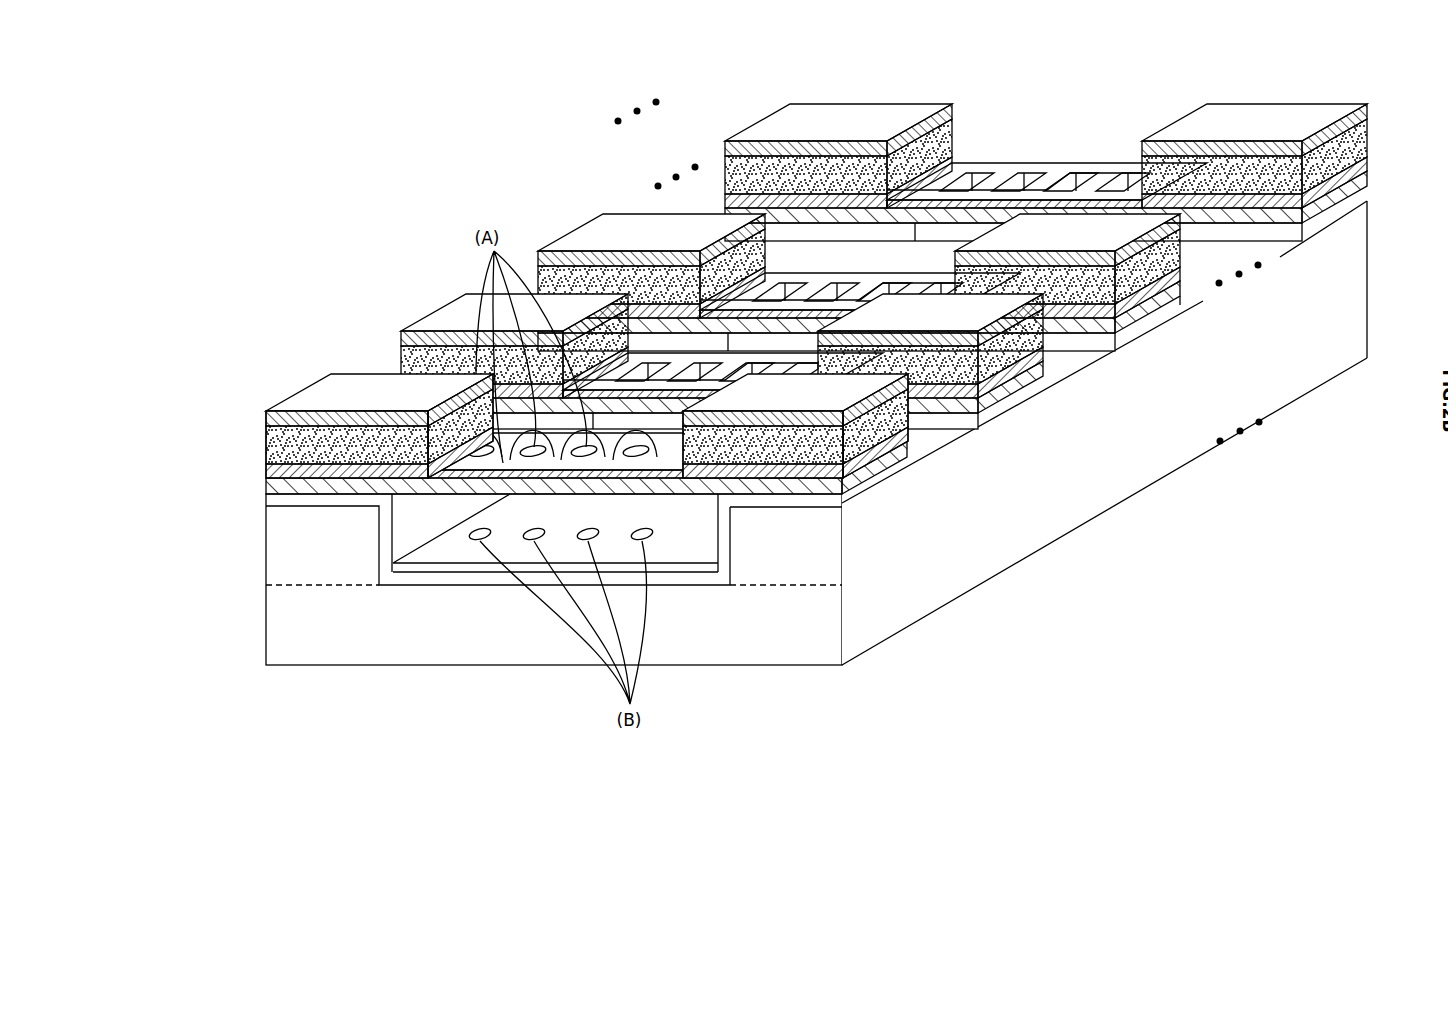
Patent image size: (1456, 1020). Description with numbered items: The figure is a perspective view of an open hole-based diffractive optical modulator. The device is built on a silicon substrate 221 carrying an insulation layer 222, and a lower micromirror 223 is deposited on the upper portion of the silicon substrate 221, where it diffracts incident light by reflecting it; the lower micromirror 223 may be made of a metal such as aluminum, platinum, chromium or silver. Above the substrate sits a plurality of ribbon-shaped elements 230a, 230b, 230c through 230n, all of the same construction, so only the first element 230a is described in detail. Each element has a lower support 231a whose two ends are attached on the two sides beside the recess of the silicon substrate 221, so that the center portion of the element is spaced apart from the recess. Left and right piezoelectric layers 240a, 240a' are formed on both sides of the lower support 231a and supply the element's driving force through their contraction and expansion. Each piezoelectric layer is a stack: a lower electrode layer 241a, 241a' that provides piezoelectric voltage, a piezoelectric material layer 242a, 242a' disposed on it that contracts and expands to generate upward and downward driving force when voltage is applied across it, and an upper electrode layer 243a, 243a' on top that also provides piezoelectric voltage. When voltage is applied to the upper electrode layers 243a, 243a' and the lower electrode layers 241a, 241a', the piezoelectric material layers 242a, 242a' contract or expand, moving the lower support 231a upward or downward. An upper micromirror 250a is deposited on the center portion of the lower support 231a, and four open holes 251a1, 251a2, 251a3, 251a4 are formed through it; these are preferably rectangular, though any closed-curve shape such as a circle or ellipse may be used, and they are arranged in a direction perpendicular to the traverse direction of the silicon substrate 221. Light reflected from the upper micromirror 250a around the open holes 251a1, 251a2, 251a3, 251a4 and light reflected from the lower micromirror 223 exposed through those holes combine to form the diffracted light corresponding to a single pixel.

The silicon substrate 221 is at (780, 657).
The insulation layer 222 is at (707, 577).
The lower micromirror 223 is at (402, 567).
The upper micromirror 250a is at (655, 572).
The open hole 251a1 is at (452, 462).
The open hole 251a2 is at (503, 458).
The open hole 251a3 is at (556, 446).
The open hole 251a4 is at (607, 458).
The element 230a is at (185, 400).
The element 230b is at (430, 315).
The element 230c is at (565, 232).
The element 230n is at (745, 140).
The lower support 231a is at (263, 485).
The piezoelectric layer 240a is at (325, 373).
The lower electrode layer 241a is at (337, 408).
The piezoelectric material layer 242a is at (348, 385).
The upper electrode layer 243a is at (365, 356).
The piezoelectric layer 240a' is at (919, 520).
The lower electrode layer 241a' is at (865, 540).
The piezoelectric material layer 242a' is at (887, 506).
The upper electrode layer 243a' is at (906, 483).